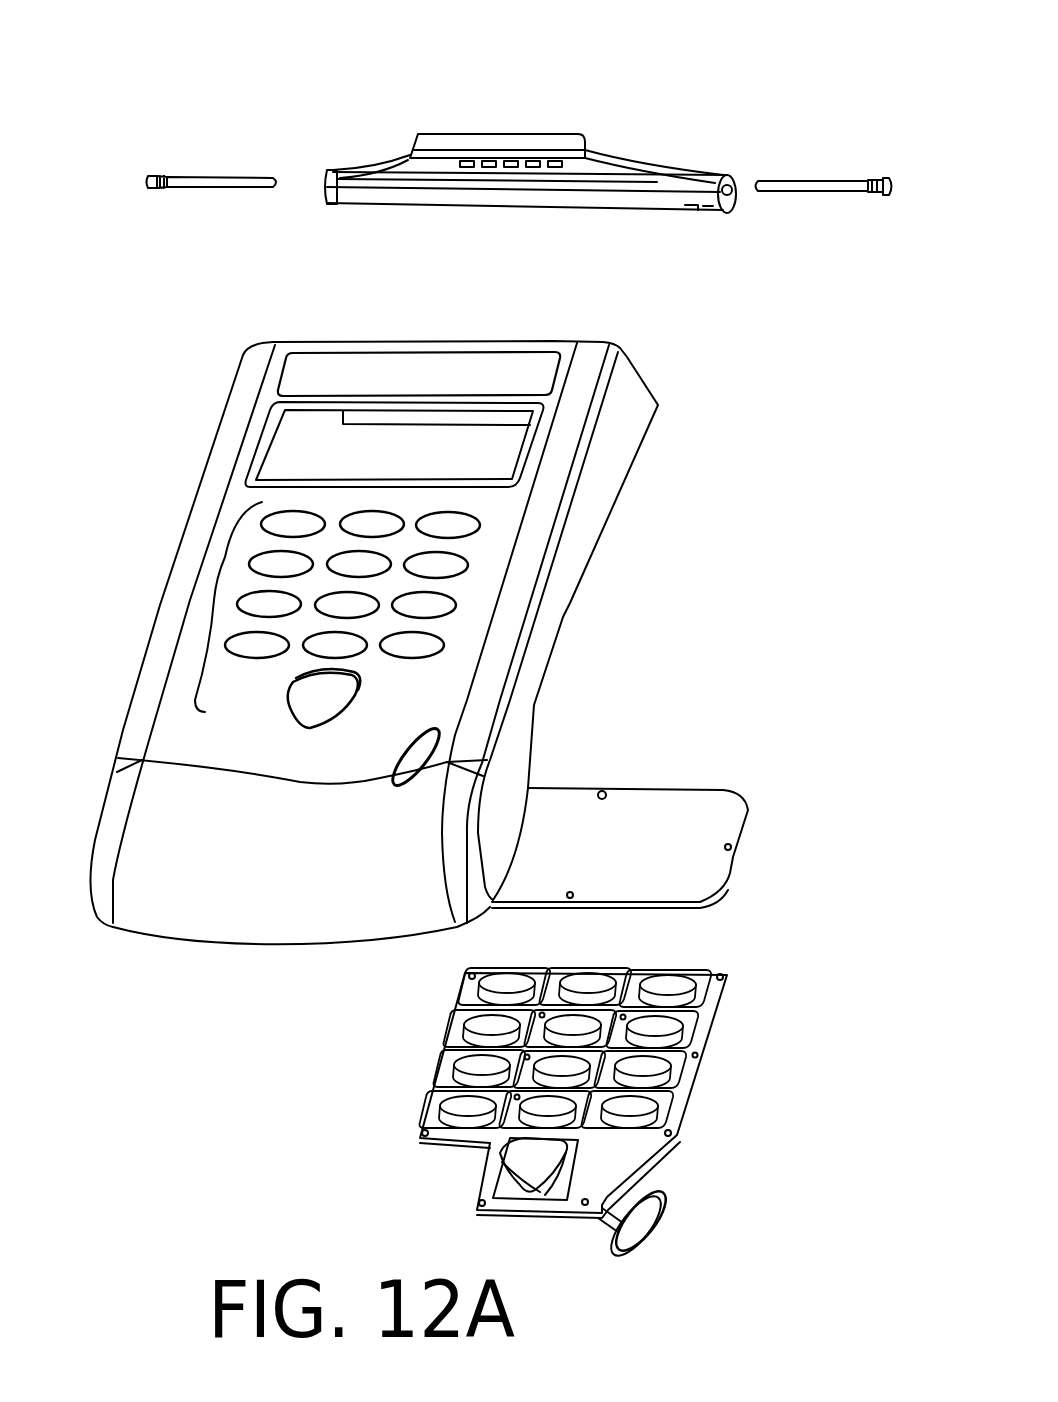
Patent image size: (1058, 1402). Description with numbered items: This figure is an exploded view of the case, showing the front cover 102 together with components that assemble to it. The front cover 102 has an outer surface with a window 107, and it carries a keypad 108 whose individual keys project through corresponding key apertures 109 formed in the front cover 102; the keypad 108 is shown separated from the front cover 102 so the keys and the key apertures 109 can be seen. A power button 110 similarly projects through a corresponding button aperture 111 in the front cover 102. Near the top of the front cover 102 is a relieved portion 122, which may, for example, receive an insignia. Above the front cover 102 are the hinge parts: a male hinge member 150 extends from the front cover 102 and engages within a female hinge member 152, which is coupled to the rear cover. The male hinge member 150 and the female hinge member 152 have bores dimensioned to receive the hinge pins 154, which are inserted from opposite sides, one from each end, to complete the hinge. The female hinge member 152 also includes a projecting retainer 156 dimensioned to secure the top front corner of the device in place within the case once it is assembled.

The front cover 102 is at (557, 340).
The window 107 is at (733, 870).
The keypad 108 is at (695, 1092).
The key apertures 109 is at (217, 578).
The power button 110 is at (645, 1225).
The button aperture 111 is at (407, 752).
The relieved portion 122 is at (343, 355).
The male hinge member 150 is at (447, 208).
The female hinge member 152 is at (420, 425).
The hinge pins 154 is at (227, 177).
The projecting retainer 156 is at (481, 133).